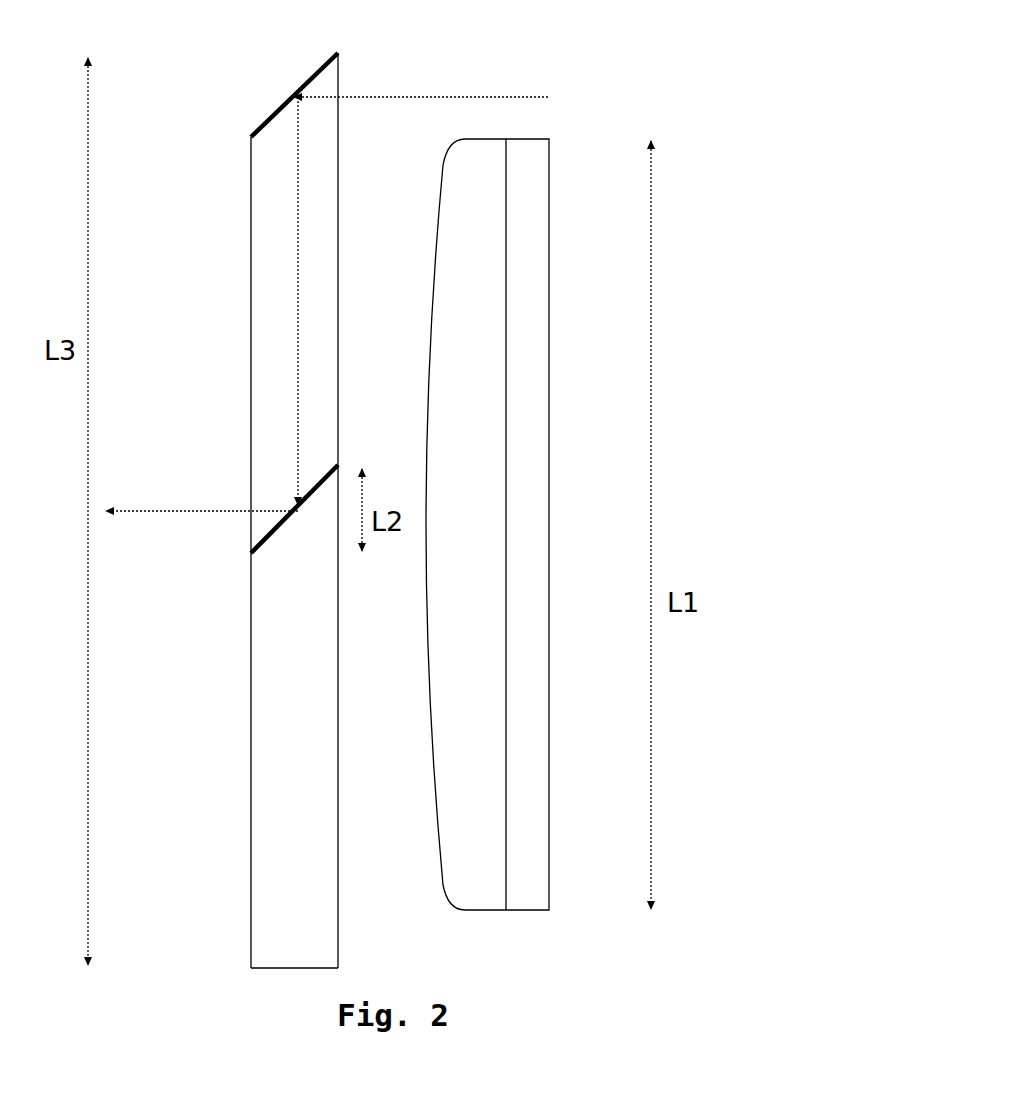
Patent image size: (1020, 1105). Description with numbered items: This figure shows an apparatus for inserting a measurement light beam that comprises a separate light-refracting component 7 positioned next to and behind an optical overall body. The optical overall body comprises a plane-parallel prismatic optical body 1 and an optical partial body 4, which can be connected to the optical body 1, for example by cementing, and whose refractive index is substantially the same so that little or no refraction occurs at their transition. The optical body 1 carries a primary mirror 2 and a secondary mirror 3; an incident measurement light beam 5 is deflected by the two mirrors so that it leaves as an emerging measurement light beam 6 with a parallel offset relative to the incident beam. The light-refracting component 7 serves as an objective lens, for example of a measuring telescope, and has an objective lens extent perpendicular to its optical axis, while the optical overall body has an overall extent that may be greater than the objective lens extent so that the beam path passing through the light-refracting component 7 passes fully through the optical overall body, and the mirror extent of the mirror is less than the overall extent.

The optical body 1 is at (318, 278).
The primary mirror 2 is at (327, 70).
The secondary mirror 3 is at (327, 477).
The optical partial body 4 is at (313, 730).
The incident measurement light beam 5 is at (507, 95).
The emerging measurement light beam 6 is at (140, 510).
The light-refracting component 7 is at (523, 413).